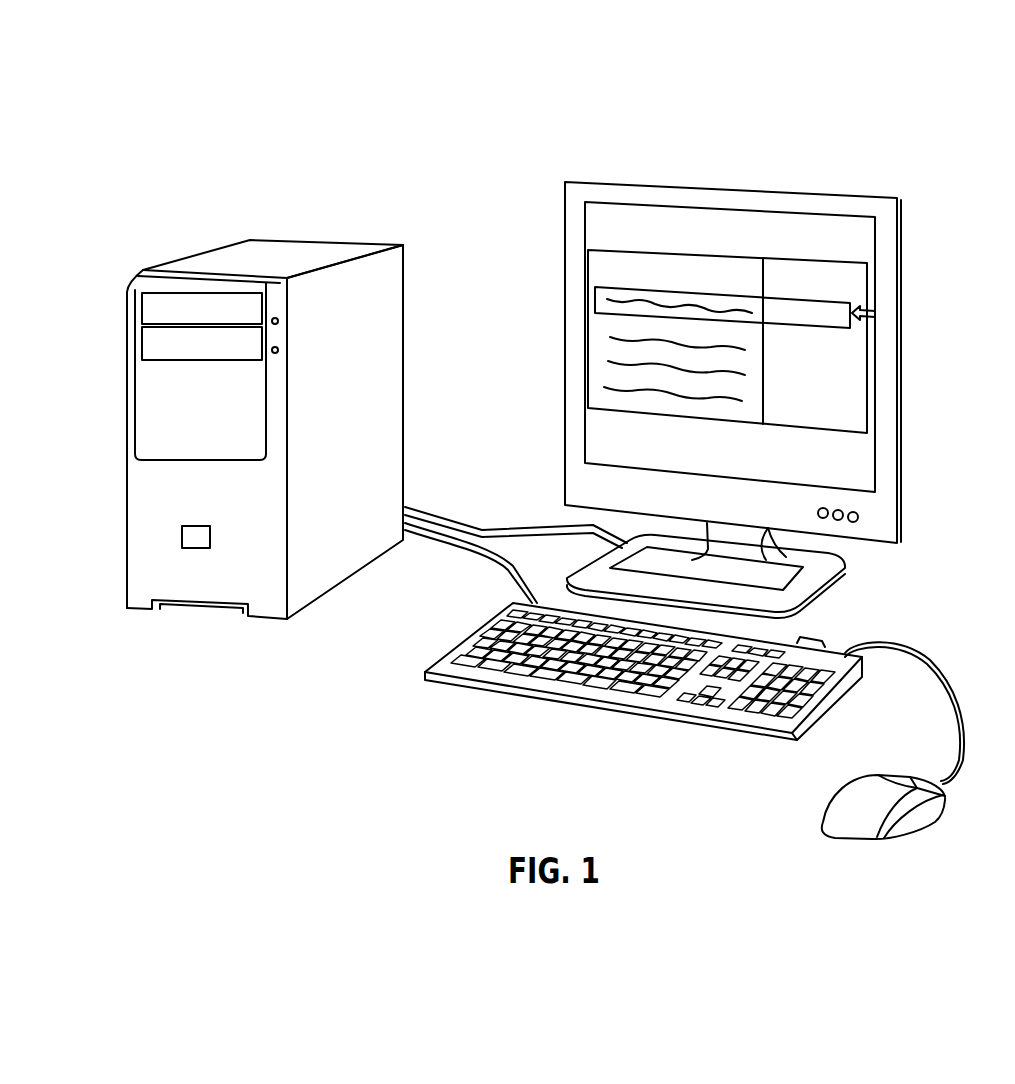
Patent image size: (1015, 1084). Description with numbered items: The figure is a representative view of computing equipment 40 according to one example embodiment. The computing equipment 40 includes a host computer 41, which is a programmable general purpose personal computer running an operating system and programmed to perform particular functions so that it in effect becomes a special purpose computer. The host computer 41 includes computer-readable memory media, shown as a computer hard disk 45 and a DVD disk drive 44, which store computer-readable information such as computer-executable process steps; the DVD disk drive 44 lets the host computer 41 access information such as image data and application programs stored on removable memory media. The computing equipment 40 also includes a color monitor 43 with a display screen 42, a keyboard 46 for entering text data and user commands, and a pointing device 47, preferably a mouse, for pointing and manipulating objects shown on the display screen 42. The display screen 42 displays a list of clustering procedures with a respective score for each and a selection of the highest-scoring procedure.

The computing equipment 40 is at (904, 157).
The host computer 41 is at (323, 242).
The display screen 42 is at (848, 380).
The color monitor 43 is at (770, 191).
The DVD disk drive 44 is at (140, 337).
The computer hard disk 45 is at (140, 303).
The keyboard 46 is at (603, 695).
The pointing device 47 is at (918, 815).